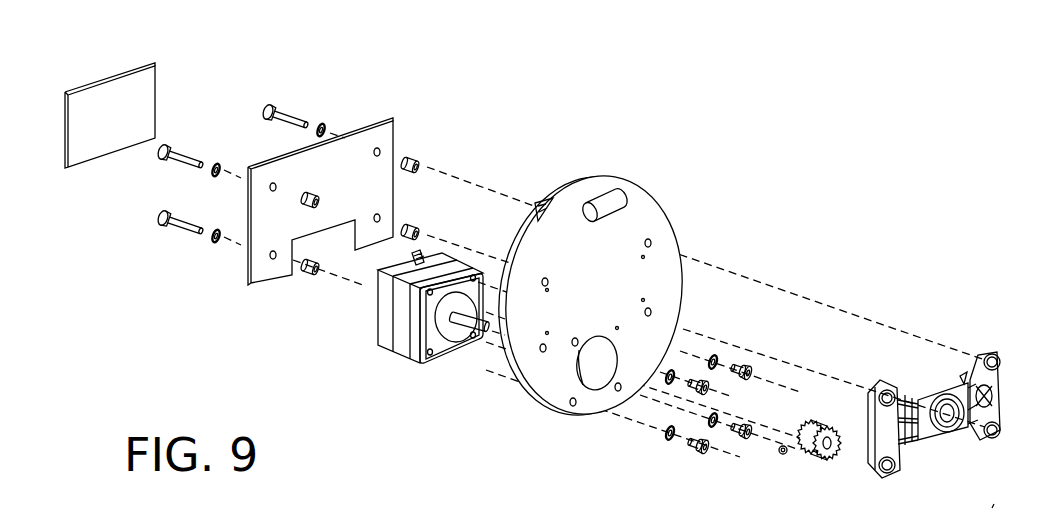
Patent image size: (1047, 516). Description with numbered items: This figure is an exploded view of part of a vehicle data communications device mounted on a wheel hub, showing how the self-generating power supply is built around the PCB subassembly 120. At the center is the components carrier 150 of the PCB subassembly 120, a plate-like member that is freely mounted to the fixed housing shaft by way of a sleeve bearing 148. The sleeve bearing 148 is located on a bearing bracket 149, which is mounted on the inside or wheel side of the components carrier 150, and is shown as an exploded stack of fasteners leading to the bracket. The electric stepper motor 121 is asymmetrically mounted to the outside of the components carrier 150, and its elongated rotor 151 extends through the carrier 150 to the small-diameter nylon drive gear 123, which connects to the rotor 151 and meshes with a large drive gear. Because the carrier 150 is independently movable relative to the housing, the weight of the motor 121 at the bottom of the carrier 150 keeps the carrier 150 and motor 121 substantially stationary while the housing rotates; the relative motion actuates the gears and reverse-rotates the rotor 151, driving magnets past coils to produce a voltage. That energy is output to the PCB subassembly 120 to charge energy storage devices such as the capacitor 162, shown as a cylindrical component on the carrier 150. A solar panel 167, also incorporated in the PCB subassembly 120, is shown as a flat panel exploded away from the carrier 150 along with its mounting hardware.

The solar panel 167 is at (100, 92).
The electric stepper motor 121 is at (376, 313).
The rotor 151 is at (470, 338).
The components carrier 150 is at (650, 213).
The capacitor 162 is at (606, 198).
The small drive gear 123 is at (812, 462).
The bearing bracket 149 is at (941, 383).
The sleeve bearing 148 is at (950, 420).
The PCB subassembly 120 is at (977, 509).